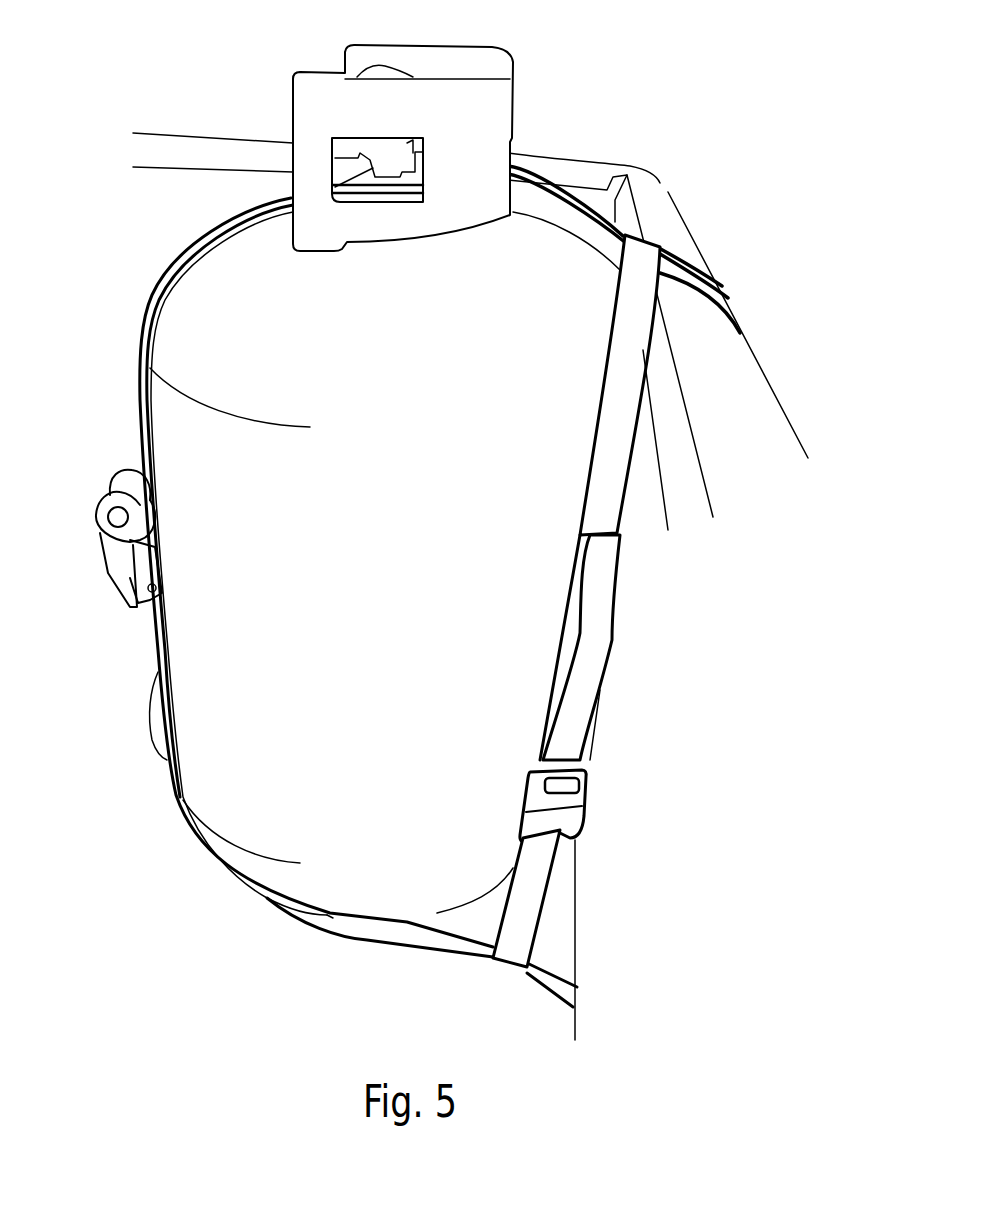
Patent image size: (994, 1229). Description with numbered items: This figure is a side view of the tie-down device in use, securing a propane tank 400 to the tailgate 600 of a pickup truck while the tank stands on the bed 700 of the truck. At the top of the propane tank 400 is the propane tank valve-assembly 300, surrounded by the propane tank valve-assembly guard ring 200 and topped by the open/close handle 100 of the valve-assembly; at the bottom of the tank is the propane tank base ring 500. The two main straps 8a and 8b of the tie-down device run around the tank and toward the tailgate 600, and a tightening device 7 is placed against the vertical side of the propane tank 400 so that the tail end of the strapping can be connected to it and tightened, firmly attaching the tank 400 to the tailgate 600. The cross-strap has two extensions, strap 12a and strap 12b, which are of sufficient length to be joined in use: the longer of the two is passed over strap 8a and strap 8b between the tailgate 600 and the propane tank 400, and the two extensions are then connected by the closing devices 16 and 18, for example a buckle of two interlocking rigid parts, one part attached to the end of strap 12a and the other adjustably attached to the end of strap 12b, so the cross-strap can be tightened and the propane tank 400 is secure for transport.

The open/close handle of propane tank valve-assembly 100 is at (413, 70).
The propane tank valve-assembly guard ring 200 is at (485, 137).
The propane tank valve-assembly 300 is at (403, 167).
The propane tank 400 is at (285, 569).
The propane tank base ring 500 is at (337, 930).
The tailgate of a pickup truck 600 is at (763, 447).
The bed of a pickup truck 700 is at (153, 907).
The tightening device 7 is at (95, 548).
The main strap 8a is at (723, 272).
The main strap 8b is at (448, 955).
The extension of strap 12a is at (593, 400).
The extension of strap 12b is at (500, 910).
The closing device 18 is at (514, 806).
The closing device 16 is at (525, 803).